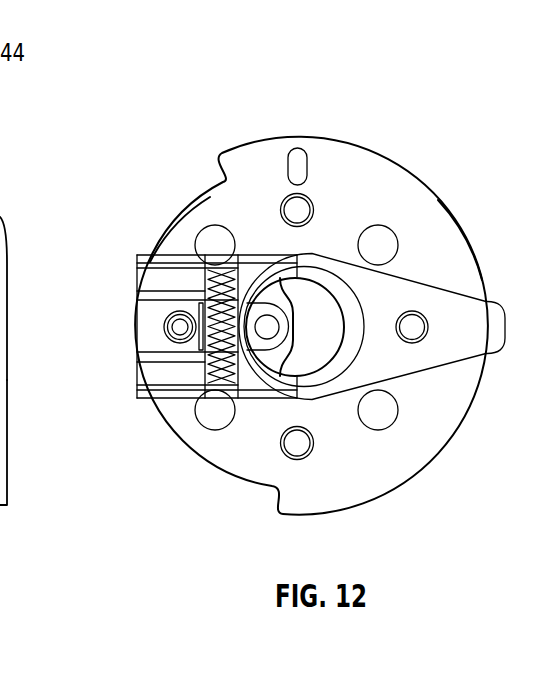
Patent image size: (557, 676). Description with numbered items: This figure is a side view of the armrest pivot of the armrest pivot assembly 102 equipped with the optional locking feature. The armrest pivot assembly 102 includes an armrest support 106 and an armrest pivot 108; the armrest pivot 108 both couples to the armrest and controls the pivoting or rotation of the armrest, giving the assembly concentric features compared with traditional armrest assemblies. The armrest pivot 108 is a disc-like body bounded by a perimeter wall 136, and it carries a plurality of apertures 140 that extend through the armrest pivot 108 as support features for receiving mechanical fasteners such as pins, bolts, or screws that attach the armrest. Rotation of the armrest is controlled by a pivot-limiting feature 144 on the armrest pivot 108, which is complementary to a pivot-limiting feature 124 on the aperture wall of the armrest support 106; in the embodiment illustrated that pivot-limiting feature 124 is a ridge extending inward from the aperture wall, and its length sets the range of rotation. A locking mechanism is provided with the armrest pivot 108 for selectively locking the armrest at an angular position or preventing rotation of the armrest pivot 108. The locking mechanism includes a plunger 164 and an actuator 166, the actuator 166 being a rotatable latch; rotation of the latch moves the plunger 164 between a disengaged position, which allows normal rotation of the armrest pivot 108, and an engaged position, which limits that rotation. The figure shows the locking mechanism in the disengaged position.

The armrest pivot assembly 102 is at (241, 102).
The armrest support 106 is at (10, 215).
The armrest pivot 108 is at (407, 198).
The pivot-limiting feature 124 is at (0, 380).
The perimeter wall 136 is at (468, 245).
The apertures 140 is at (368, 240).
The pivot-limiting feature 144 is at (179, 213).
The plunger 164 is at (0, 295).
The actuator 166 is at (428, 343).